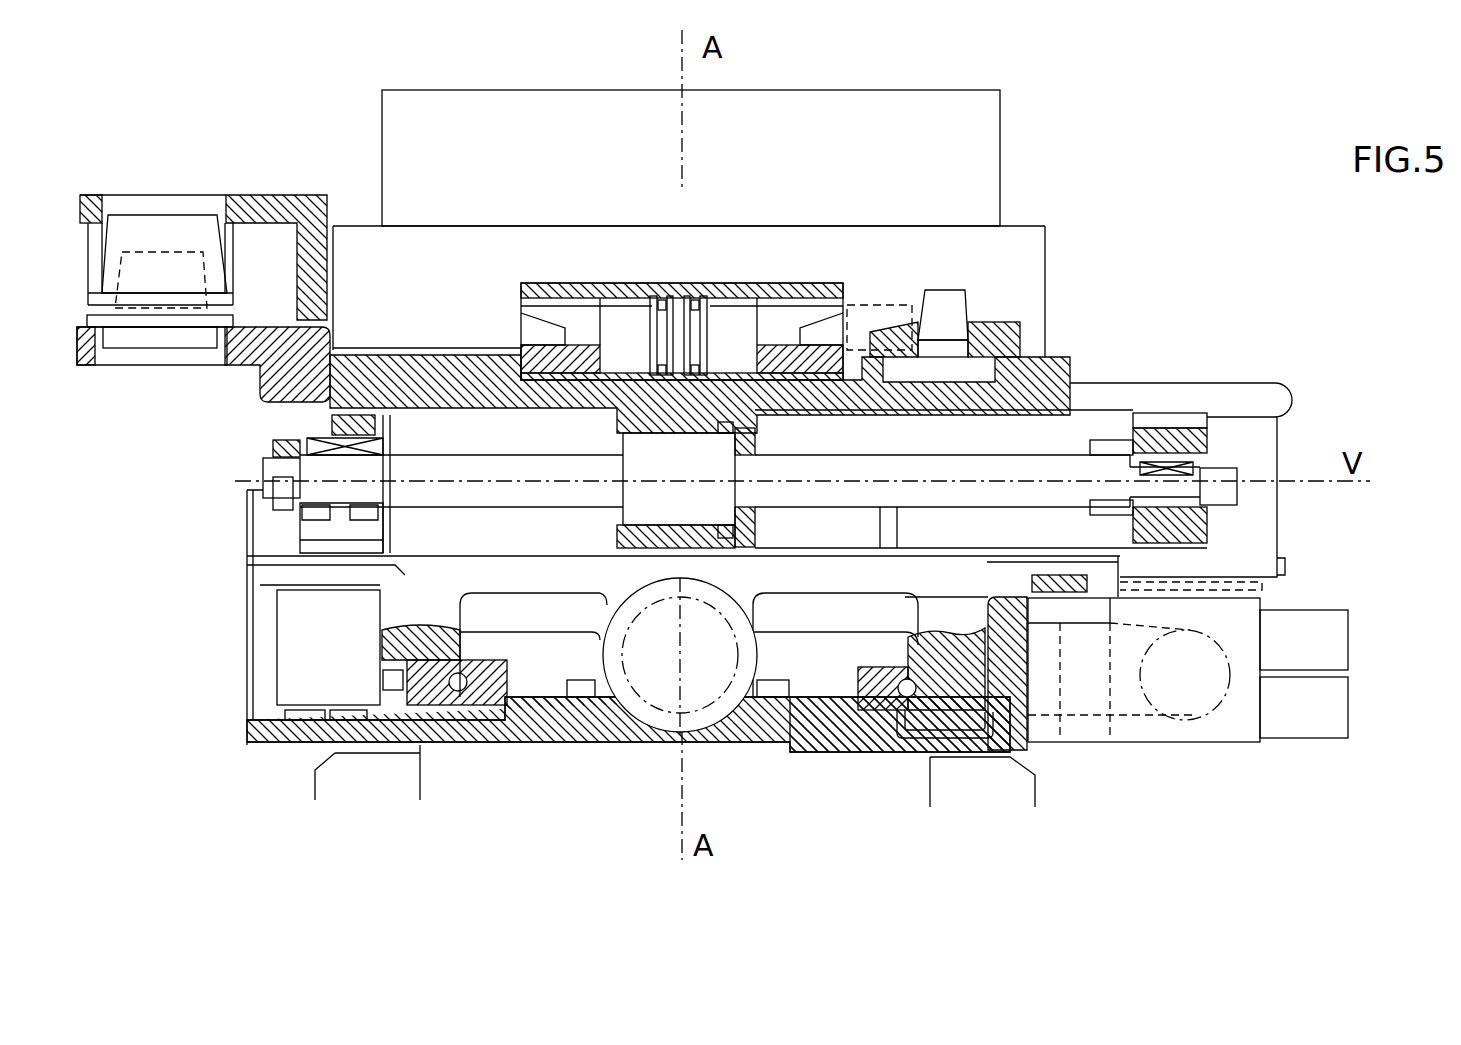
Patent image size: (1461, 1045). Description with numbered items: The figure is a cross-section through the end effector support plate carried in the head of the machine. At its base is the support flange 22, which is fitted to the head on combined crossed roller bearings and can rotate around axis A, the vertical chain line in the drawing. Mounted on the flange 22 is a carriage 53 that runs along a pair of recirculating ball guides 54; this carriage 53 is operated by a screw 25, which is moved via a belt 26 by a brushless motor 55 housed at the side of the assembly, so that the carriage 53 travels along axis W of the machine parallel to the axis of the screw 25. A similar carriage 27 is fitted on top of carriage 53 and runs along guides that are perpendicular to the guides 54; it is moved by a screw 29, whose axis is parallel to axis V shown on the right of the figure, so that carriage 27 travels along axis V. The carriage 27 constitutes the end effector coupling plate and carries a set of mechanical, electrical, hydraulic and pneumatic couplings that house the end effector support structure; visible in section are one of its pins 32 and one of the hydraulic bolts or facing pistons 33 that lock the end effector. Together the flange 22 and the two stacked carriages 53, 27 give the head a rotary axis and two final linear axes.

The support flange 22 is at (807, 720).
The screw 25 is at (658, 672).
The belt 26 is at (1118, 720).
The carriage 27 is at (410, 356).
The screw 29 is at (558, 485).
The pins 32 is at (953, 314).
The hydraulic bolts 33 is at (583, 326).
The carriage 53 is at (462, 580).
The recirculating ball guides 54 is at (447, 697).
The brushless motor 55 is at (1225, 720).